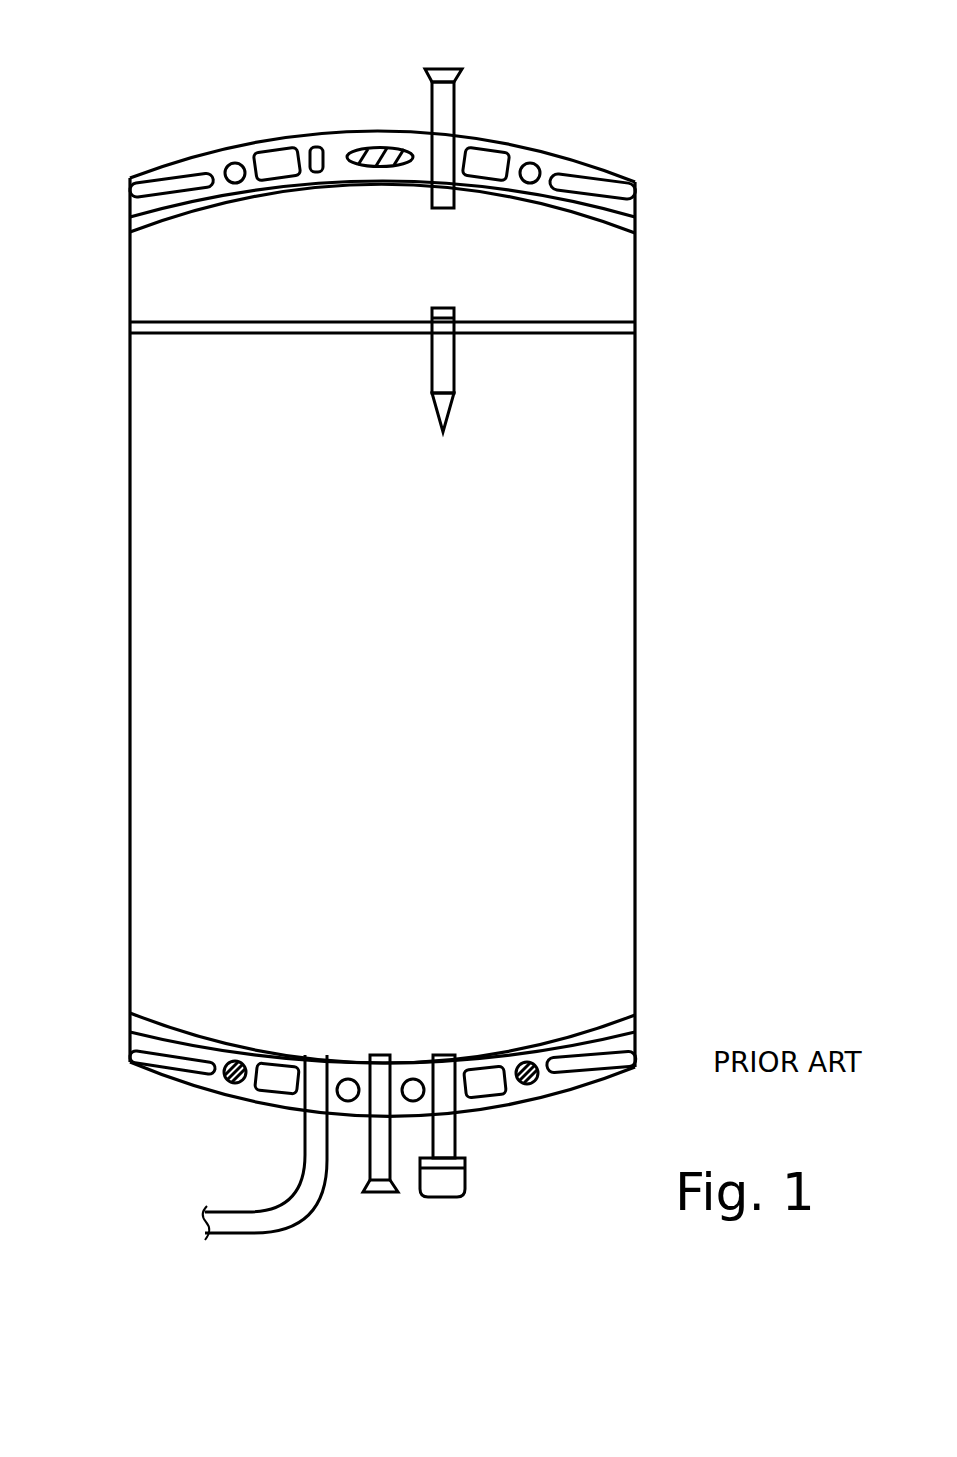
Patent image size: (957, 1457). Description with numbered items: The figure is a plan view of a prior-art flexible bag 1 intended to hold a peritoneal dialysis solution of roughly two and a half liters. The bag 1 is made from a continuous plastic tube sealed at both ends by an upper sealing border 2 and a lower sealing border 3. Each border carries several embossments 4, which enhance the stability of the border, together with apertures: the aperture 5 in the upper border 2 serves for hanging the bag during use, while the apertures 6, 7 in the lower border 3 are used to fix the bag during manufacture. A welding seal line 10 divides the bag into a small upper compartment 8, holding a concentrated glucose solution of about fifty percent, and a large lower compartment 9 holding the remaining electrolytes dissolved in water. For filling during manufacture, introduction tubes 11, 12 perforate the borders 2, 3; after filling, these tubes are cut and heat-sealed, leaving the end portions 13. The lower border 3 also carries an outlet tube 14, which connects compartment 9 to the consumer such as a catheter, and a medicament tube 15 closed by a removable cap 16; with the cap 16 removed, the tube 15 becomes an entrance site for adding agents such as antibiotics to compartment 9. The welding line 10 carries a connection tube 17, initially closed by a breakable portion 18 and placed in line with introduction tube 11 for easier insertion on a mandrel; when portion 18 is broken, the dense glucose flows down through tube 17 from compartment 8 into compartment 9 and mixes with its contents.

The bag body 1 is at (636, 692).
The sealing border 2 is at (637, 191).
The sealing border 3 is at (624, 1020).
The embossments 4 is at (181, 178).
The aperture 5 is at (385, 148).
The aperture 6 is at (236, 1084).
The aperture 7 is at (533, 1086).
The upper compartment 8 is at (625, 275).
The lower compartment 9 is at (617, 562).
The welding seal line 10 is at (598, 335).
The introduction tube 11 is at (455, 103).
The introduction tube 12 is at (368, 1150).
The end portions 13 is at (450, 70).
The outlet tube 14 is at (245, 1237).
The medicament tube 15 is at (457, 1137).
The removable cap 16 is at (457, 1197).
The connection tube 17 is at (455, 372).
The breakable portion 18 is at (448, 412).